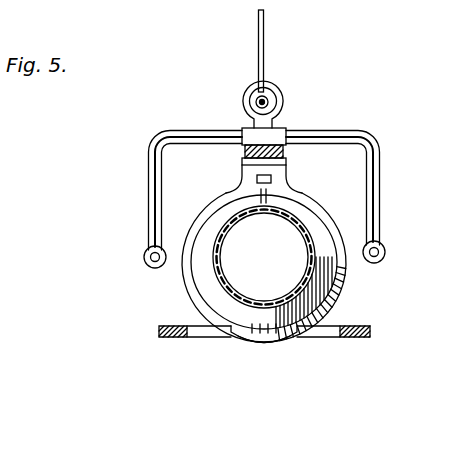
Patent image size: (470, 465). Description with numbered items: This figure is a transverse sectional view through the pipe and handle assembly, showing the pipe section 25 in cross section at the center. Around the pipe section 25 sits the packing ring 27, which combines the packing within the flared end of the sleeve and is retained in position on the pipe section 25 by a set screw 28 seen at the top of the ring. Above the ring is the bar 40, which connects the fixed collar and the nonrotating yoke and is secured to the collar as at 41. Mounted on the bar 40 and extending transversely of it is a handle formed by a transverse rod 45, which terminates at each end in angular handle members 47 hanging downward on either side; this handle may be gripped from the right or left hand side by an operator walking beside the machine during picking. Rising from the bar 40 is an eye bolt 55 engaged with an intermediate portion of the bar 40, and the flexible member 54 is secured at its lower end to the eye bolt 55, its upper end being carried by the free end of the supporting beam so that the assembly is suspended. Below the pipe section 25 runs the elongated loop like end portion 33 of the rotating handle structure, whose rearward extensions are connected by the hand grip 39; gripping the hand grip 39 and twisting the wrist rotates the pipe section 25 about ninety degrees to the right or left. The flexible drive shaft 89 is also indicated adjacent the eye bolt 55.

The rod 54 is at (265, 33).
The eye ring 55 is at (280, 87).
The pivot pin 89 is at (253, 102).
The block 40 is at (289, 128).
The key 28 is at (272, 177).
The left arm 47 is at (149, 188).
The right arm 45 is at (350, 128).
The foot 41 is at (382, 222).
The ring 27 is at (343, 274).
The hub 25 is at (213, 265).
The bar 33 is at (155, 349).
The plate 39 is at (260, 346).